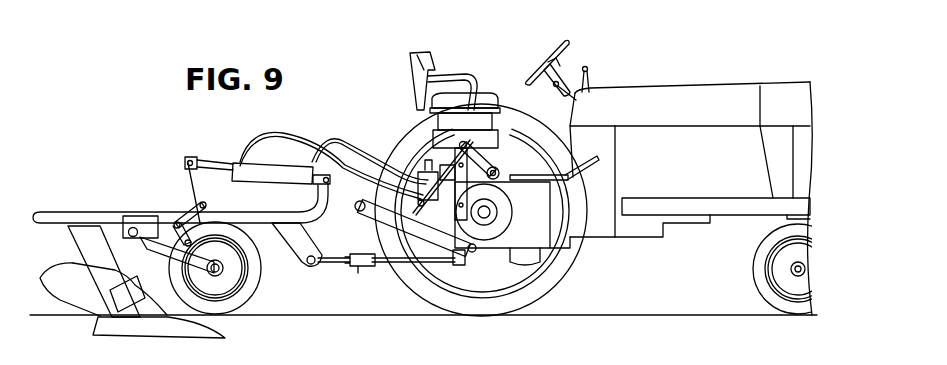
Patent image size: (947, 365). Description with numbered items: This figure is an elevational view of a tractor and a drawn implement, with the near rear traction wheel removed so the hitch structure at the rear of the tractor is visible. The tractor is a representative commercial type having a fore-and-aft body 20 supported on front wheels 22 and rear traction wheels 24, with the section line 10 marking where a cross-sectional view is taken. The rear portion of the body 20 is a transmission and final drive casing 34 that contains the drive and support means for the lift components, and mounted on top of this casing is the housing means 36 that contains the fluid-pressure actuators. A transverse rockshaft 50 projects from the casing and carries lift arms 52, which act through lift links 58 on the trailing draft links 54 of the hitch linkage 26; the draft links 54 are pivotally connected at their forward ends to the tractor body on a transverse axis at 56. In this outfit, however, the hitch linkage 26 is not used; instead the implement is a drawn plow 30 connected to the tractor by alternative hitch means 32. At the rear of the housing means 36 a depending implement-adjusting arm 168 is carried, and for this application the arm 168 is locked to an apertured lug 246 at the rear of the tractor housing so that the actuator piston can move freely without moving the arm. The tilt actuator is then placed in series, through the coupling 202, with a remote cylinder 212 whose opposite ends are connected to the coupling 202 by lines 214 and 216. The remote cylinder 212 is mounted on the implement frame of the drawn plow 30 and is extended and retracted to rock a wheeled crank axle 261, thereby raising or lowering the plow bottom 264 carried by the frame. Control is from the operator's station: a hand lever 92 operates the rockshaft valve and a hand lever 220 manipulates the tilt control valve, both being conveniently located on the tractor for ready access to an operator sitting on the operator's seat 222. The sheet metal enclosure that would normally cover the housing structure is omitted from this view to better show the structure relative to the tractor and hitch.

The section line 10 is at (432, 27).
The fore-and-aft body 20 is at (638, 229).
The front wheels 22 is at (762, 285).
The rear traction wheels 24 is at (568, 272).
The hitch linkage 26 is at (382, 229).
The drawn plow 30 is at (143, 215).
The alternative hitch means 32 is at (418, 266).
The transmission and final drive casing 34 is at (548, 231).
The housing means 36 is at (507, 158).
The rockshaft 50 is at (500, 179).
The lift arms 52 is at (481, 141).
The draft links 54 is at (357, 212).
The transverse axis 56 is at (473, 252).
The lift links 58 is at (417, 202).
The hand lever 92 is at (563, 69).
The implement-adjusting arm 168 is at (430, 163).
The coupling 202 is at (428, 180).
The remote cylinder 212 is at (268, 178).
The line 214 is at (338, 141).
The line 216 is at (276, 137).
The hand lever 220 is at (588, 68).
The operator's seat 222 is at (462, 92).
The apertured lug 246 is at (407, 228).
The wheeled crank axle 261 is at (163, 253).
The plow bottom 264 is at (120, 327).